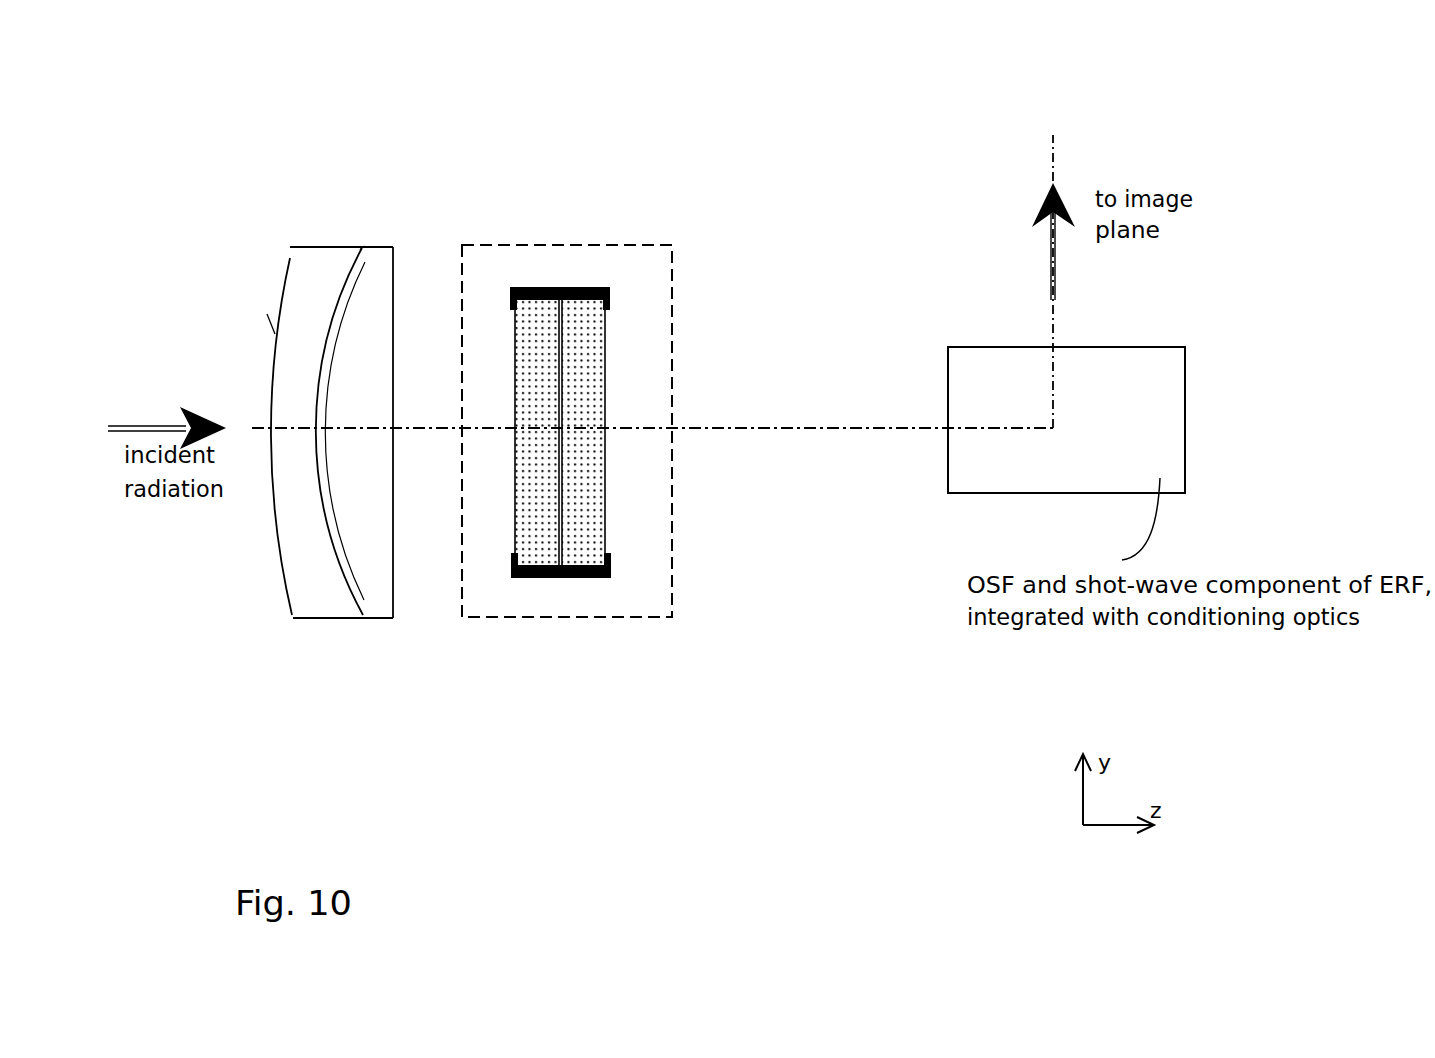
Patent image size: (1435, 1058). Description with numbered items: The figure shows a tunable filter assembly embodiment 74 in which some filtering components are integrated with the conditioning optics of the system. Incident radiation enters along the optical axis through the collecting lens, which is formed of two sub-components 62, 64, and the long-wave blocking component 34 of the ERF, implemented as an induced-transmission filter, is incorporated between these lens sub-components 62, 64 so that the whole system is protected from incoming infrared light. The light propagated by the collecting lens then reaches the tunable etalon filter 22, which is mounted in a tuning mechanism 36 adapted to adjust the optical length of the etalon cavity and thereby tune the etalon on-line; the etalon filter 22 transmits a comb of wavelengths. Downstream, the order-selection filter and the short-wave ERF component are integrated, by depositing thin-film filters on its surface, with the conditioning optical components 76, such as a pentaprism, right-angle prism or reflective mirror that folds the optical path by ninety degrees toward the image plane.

The embodiment 74 is at (772, 137).
The long-wave blocking component 34 is at (313, 373).
The collecting lens sub-component 62 is at (323, 593).
The collecting lens sub-component 64 is at (375, 598).
The tunable etalon filter 22 is at (548, 535).
The tuning mechanism 36 is at (567, 618).
The conditioning optical components 76 is at (1142, 384).